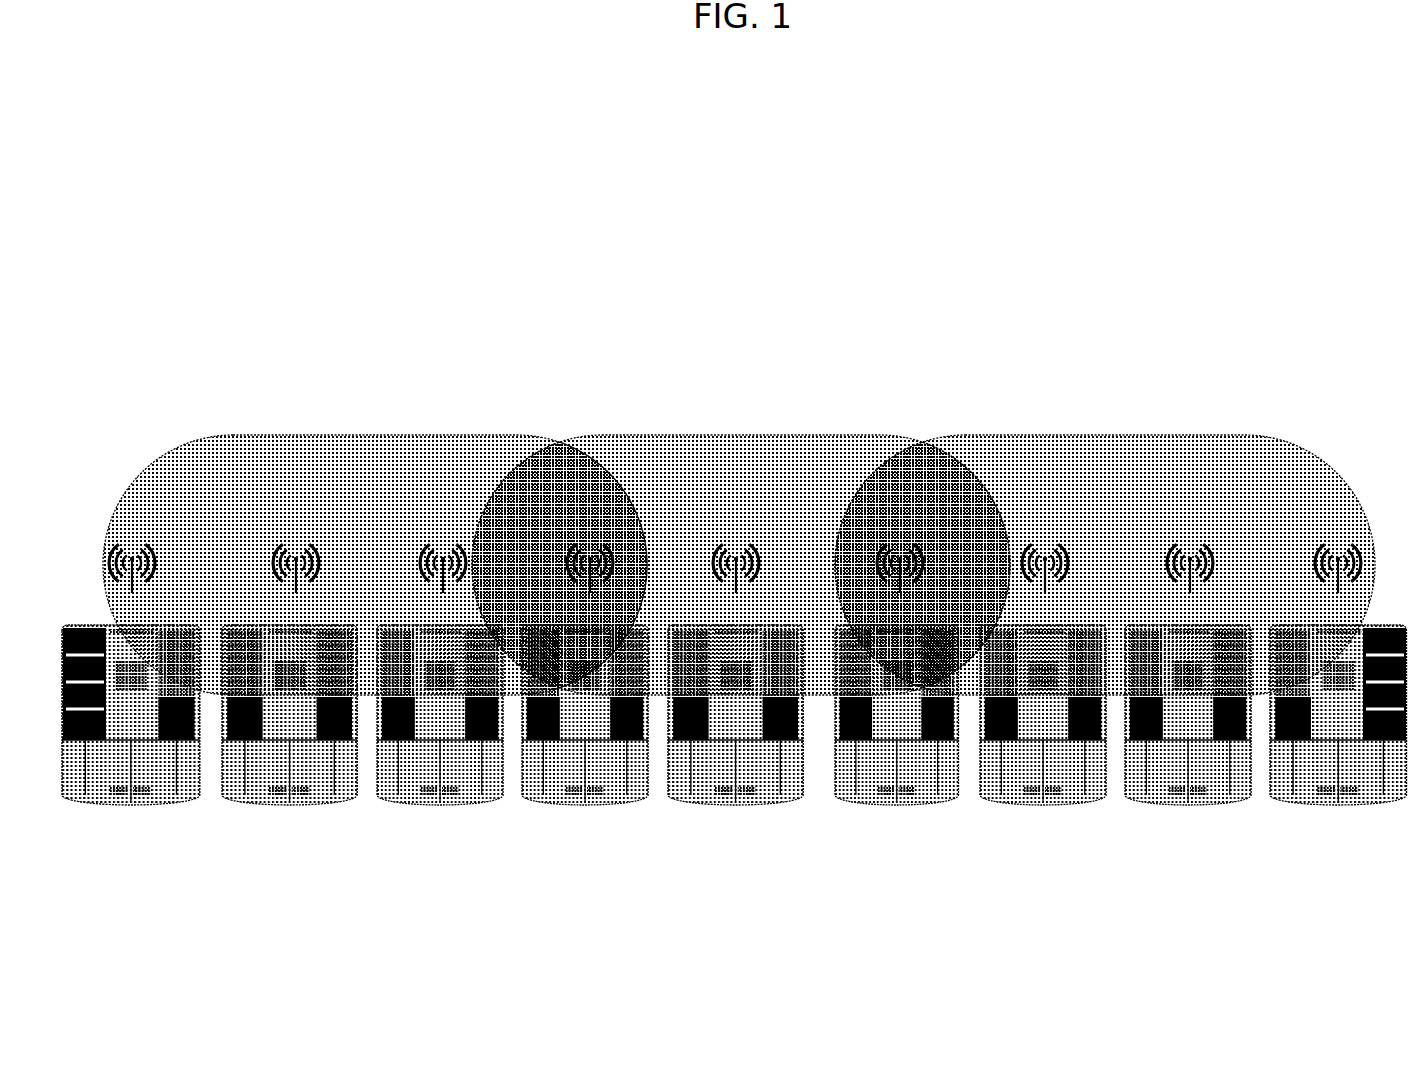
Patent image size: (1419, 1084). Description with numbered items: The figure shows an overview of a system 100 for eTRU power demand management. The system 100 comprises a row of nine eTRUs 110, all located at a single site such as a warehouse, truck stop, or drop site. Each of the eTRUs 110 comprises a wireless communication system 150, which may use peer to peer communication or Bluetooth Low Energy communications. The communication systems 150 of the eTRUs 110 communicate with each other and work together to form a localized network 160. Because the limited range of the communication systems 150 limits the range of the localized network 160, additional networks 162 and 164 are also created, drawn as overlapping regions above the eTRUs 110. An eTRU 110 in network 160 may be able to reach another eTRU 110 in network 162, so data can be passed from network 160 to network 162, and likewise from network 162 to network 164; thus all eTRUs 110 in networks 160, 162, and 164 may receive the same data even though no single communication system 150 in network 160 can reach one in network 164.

The system 100 is at (278, 158).
The eTRU 110 is at (1335, 813).
The wireless communication system 150 is at (308, 528).
The localized network 160 is at (478, 455).
The network 162 is at (743, 462).
The network 164 is at (1018, 460).